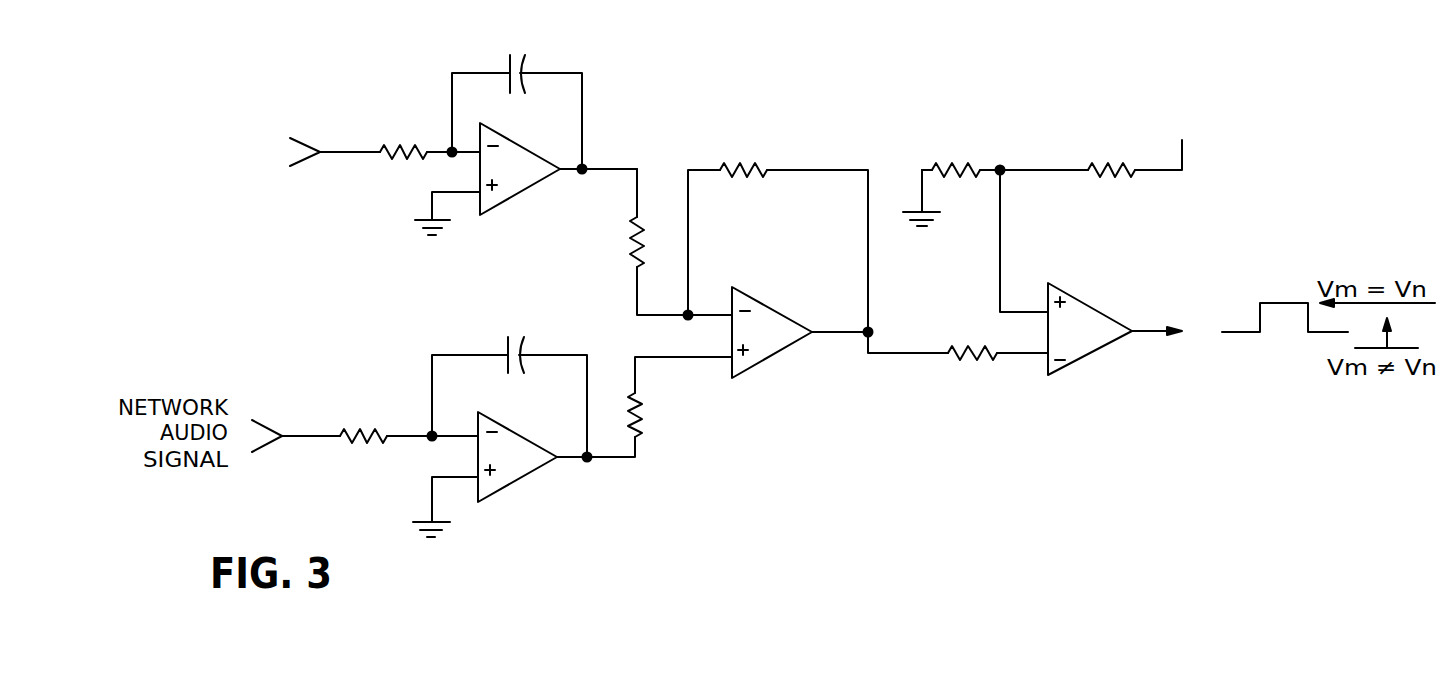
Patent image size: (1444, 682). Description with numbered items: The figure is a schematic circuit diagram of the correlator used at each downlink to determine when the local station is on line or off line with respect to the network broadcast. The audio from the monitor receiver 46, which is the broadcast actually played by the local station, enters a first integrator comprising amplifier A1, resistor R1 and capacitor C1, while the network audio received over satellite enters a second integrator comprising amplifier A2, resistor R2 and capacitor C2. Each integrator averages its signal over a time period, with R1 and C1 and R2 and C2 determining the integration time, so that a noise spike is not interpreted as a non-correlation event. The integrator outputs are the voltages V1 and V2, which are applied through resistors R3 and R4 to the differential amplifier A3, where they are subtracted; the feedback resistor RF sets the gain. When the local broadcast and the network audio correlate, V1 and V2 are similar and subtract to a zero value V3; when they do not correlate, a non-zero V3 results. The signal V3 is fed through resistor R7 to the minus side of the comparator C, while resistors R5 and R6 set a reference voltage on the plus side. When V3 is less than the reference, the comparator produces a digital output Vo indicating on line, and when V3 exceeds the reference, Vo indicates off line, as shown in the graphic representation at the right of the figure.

The monitor receiver 46 is at (246, 152).
The first integrator resistor R1 is at (430, 141).
The second integrator resistor R2 is at (409, 420).
The input resistor to A3 R3 is at (681, 242).
The input resistor to A3 R4 is at (644, 407).
The reference voltage resistor R5 is at (1155, 143).
The reference voltage resistor R6 is at (995, 179).
The comparator input resistor R7 is at (998, 369).
The feedback resistor RF is at (818, 240).
The first integrator capacitor C1 is at (517, 101).
The second integrator capacitor C2 is at (509, 384).
The first integrator amplifier A1 is at (487, 179).
The second integrator amplifier A2 is at (485, 474).
The differential amplifier A3 is at (800, 332).
The comparator C is at (1091, 272).
The first integrator output voltage V1 is at (599, 169).
The second integrator output voltage V2 is at (629, 472).
The difference voltage V3 is at (890, 353).
The digital output signal Vo is at (1268, 319).